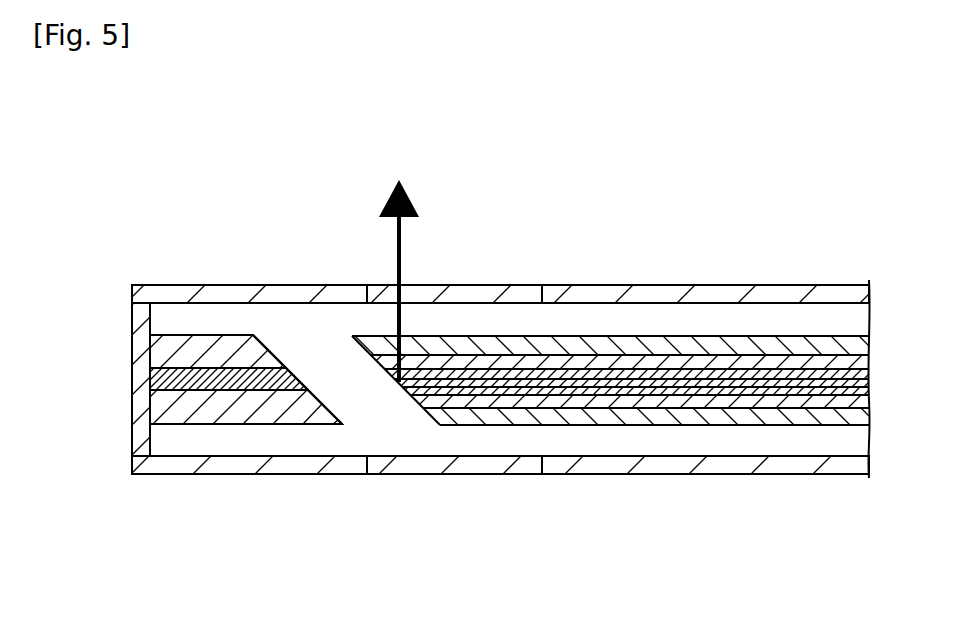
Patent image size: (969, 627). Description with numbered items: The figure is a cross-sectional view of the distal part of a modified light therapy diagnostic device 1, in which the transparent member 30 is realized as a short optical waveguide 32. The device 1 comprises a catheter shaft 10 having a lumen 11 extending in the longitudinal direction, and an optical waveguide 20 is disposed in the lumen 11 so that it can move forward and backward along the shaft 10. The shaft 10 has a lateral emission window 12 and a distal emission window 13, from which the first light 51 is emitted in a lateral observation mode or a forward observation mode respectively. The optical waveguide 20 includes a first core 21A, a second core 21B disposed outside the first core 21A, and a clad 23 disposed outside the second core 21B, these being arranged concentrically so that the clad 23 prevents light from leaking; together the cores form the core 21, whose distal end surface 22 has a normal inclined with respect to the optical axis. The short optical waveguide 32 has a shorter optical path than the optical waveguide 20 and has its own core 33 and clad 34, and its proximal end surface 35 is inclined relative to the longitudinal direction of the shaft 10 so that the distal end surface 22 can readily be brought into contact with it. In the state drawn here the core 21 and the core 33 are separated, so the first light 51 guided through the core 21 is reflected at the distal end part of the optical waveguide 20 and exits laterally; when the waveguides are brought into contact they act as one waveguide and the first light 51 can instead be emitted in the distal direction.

The light therapy diagnostic device 1 is at (110, 218).
The catheter shaft 10 is at (267, 287).
The lumen 11 is at (515, 438).
The lateral emission window 12 is at (477, 285).
The distal emission window 13 is at (138, 445).
The optical waveguide 20 is at (835, 180).
The core 21 is at (785, 238).
The first core 21A is at (650, 370).
The second core 21B is at (713, 360).
The distal end surface 22 is at (410, 393).
The clad 23 is at (785, 345).
The transparent member 30 is at (250, 240).
The short optical waveguide 32 is at (245, 329).
The core 33 is at (192, 380).
The clad 34 is at (240, 342).
The proximal end surface 35 is at (303, 382).
The first light 51 is at (395, 258).